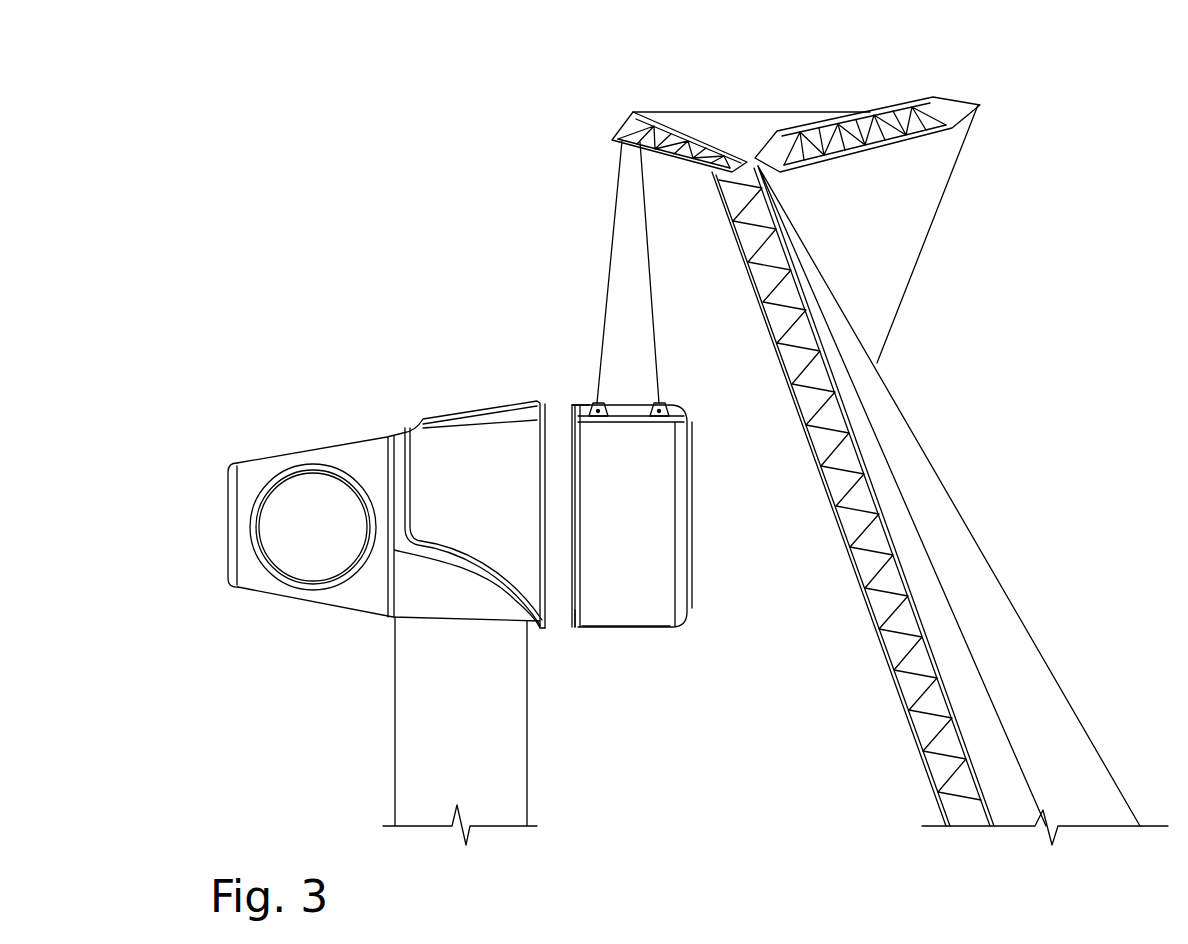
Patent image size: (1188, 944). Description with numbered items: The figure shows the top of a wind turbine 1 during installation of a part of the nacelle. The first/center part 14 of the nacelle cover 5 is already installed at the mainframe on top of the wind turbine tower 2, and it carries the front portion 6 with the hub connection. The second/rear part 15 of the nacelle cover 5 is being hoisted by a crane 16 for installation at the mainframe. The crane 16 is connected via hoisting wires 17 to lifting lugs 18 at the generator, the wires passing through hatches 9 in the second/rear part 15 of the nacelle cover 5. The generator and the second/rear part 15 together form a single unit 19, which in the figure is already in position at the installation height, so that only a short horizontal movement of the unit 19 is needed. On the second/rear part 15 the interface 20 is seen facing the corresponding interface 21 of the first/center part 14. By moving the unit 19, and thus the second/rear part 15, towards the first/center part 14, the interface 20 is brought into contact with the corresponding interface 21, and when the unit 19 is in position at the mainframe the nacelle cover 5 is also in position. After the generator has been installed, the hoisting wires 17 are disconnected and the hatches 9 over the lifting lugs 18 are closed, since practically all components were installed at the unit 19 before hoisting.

The wind turbine 1 is at (296, 167).
The wind turbine tower 2 is at (510, 797).
The nacelle cover 5 is at (428, 443).
The hub connection / front portion 6 is at (253, 470).
The hatches 9 is at (595, 405).
The first/center part 14 is at (470, 410).
The second/rear part 15 is at (645, 628).
The crane 16 is at (842, 485).
The hoisting wires 17 is at (613, 280).
The lifting lugs 18 is at (658, 405).
The unit 19 is at (626, 531).
The interface 20 is at (565, 630).
The interface 21 is at (553, 633).